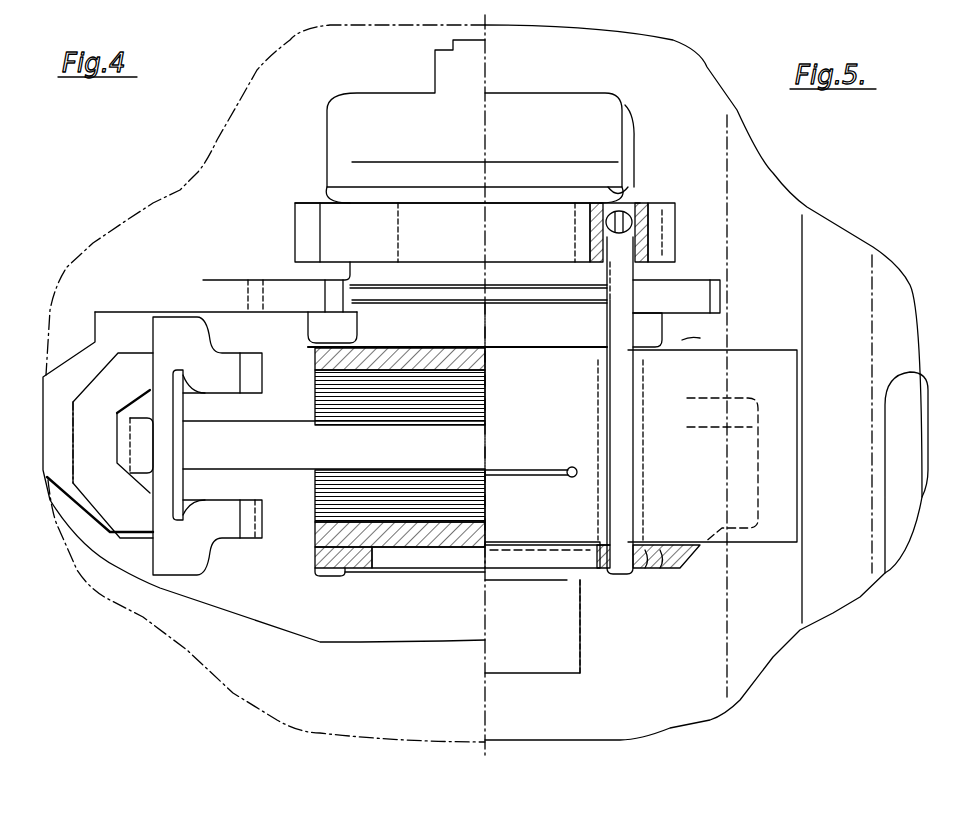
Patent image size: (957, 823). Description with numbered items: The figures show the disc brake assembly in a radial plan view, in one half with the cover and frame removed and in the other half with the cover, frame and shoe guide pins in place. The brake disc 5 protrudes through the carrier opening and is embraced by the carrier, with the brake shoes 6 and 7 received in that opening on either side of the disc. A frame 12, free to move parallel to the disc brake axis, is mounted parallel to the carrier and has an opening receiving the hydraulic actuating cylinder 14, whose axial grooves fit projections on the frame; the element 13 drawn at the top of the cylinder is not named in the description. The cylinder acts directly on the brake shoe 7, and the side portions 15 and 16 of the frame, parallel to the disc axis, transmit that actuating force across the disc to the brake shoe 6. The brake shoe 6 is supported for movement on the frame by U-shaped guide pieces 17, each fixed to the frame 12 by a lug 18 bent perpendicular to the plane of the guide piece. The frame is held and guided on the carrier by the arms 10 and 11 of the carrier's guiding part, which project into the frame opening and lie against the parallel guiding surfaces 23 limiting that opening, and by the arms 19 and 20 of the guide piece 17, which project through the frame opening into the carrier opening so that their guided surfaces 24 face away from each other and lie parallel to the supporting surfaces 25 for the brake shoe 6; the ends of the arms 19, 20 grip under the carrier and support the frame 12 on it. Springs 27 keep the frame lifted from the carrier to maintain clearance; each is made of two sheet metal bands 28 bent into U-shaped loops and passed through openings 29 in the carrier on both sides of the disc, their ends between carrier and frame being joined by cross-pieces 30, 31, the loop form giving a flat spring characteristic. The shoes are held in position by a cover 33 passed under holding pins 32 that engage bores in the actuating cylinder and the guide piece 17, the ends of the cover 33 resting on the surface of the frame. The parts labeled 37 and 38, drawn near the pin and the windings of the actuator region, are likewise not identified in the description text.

In FIG. 4, the brake disc 5 is at (279, 423).
In FIG. 4, the brake shoe 6 is at (390, 552).
In FIG. 4, the brake shoe 7 is at (317, 357).
In FIG. 4, the arm 10 is at (299, 287).
In FIG. 5, the arm 11 is at (672, 290).
In FIG. 5, the frame 12 is at (716, 122).
In FIG. 5, the cap 13 is at (467, 121).
In FIG. 4, the hydraulic actuating cylinder 14 is at (330, 220).
In FIG. 4, the side portion 15 is at (108, 248).
In FIG. 5, the side portion 16 is at (812, 287).
In FIG. 5, the guide piece 17 is at (565, 555).
In FIG. 5, the lug 18 is at (550, 660).
In FIG. 4, the arm 19 is at (333, 562).
In FIG. 5, the arm 20 is at (648, 573).
In FIG. 5, the guiding surface 23 is at (682, 345).
In FIG. 4, the guided surface 24 is at (318, 552).
In FIG. 5, the guided surface 24 is at (665, 546).
In FIG. 4, the supporting surface 25 is at (350, 471).
In FIG. 4, the spring 27 is at (167, 532).
In FIG. 4, the sheet metal band 28 is at (228, 358).
In FIG. 4, the opening 29 is at (255, 538).
In FIG. 4, the cross-piece 30 is at (85, 468).
In FIG. 4, the cross-piece 31 is at (162, 402).
In FIG. 5, the holding pin 32 is at (628, 452).
In FIG. 4, the cover 33 is at (503, 527).
In FIG. 5, the bearing 37 is at (718, 316).
In FIG. 4, the winding 38 is at (315, 496).